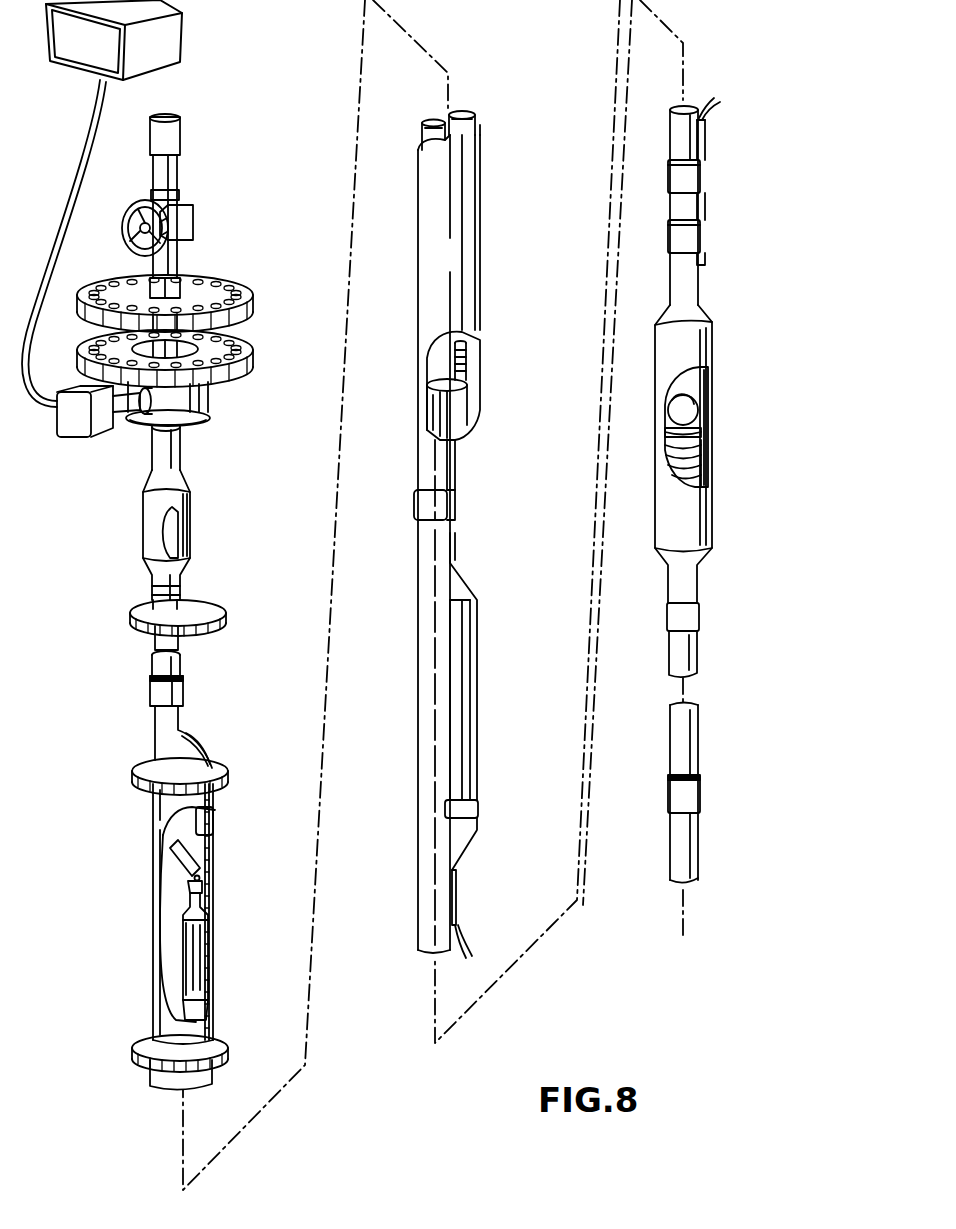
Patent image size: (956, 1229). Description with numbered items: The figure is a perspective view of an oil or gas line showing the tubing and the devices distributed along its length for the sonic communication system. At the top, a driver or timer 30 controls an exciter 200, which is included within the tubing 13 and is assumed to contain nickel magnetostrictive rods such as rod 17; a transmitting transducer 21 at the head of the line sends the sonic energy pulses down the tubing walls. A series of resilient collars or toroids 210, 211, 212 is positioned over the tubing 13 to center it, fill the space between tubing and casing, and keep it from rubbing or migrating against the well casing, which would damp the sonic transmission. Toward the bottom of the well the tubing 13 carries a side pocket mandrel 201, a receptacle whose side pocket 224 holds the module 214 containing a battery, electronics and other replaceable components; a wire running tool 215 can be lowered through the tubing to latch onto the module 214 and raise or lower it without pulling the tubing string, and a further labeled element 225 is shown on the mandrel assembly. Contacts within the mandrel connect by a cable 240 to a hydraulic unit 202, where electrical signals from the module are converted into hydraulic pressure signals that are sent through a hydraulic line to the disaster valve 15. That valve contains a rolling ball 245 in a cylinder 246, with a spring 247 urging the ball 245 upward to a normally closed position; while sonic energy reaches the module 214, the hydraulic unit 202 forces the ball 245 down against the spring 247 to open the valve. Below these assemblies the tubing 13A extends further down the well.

The driver or timer 30 is at (182, 38).
The transmitting transducer 21 is at (252, 279).
The tubing 13 is at (181, 443).
The exciter 200 is at (215, 535).
The magnetostrictive rod 17 is at (188, 538).
The resilient collar or toroid 210 is at (222, 607).
The resilient collar or toroid 211 is at (228, 770).
The side pocket mandrel 201 is at (169, 898).
The wire running tool 215 is at (172, 866).
The module 214 is at (200, 968).
The resilient collar or toroid 212 is at (216, 1048).
The side pocket 224 is at (470, 110).
The screw fitting 225 is at (468, 358).
The cable 240 is at (440, 505).
The hydraulic unit 202 is at (468, 700).
The disaster valve 15 is at (749, 491).
The rolling ball 245 is at (712, 405).
The cylinder 246 is at (712, 432).
The spring 247 is at (712, 470).
The tubing 13A is at (697, 830).